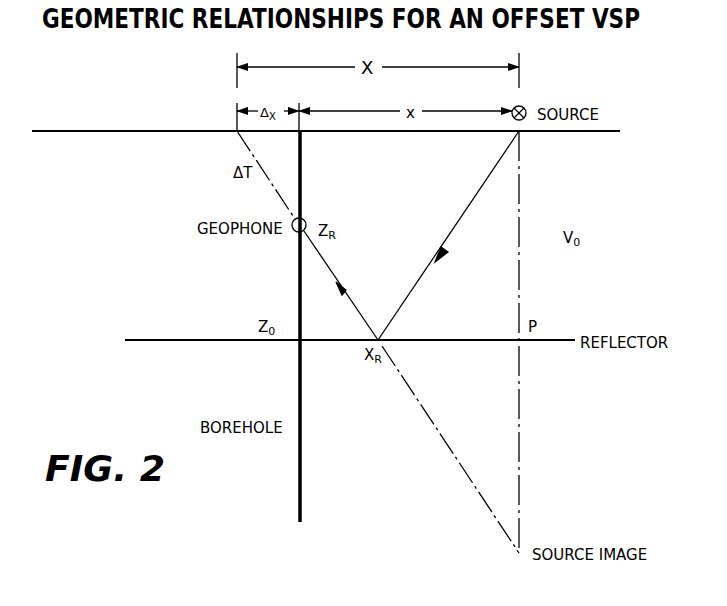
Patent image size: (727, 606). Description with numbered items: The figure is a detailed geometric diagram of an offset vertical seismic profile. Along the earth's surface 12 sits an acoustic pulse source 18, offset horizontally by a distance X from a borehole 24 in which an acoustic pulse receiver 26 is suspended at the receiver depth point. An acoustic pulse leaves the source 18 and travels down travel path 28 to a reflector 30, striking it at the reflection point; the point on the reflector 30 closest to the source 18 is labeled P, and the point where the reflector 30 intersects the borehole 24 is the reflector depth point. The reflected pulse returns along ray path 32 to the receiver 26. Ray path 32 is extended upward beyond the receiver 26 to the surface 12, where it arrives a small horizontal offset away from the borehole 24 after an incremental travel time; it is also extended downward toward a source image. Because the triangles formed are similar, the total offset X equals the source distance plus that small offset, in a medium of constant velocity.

The earth's surface 12 is at (92, 128).
The acoustic pulse source 18 is at (526, 107).
The borehole 24 is at (298, 286).
The acoustic pulse receiver 26 is at (305, 217).
The travel path 28 is at (455, 232).
The reflector 30 is at (557, 338).
The ray path 32 is at (336, 270).